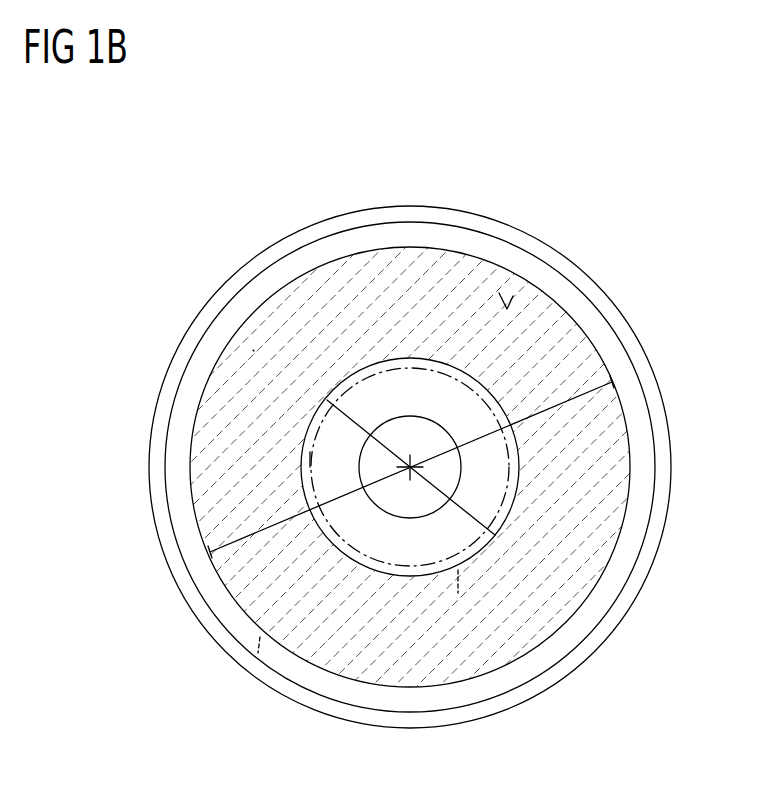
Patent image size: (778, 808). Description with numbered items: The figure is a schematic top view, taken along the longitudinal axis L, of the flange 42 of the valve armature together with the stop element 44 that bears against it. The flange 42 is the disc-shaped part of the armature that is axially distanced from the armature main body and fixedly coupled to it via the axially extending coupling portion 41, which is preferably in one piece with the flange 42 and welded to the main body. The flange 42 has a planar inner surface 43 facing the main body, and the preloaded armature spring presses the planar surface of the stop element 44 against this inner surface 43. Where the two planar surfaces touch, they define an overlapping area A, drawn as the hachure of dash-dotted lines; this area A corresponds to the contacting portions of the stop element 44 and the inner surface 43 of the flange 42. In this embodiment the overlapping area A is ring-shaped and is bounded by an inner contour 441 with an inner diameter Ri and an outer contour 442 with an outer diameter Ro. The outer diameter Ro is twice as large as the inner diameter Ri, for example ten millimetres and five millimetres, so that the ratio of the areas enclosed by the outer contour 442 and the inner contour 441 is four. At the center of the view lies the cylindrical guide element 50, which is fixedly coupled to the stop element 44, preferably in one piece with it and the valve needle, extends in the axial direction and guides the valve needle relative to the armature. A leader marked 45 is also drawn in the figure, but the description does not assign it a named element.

The coupling portion 41 is at (670, 452).
The flange 42 is at (577, 634).
The inner surface 43 is at (625, 541).
The stop element 44 is at (560, 338).
The inner contour 441 is at (462, 570).
The outer contour 442 is at (260, 635).
The boundary region 45 is at (507, 309).
The cylindrical guide element 50 is at (327, 455).
The longitudinal axis L is at (410, 467).
The inner diameter Ri is at (355, 421).
The outer diameter Ro is at (478, 436).
The overlapping area A is at (253, 350).